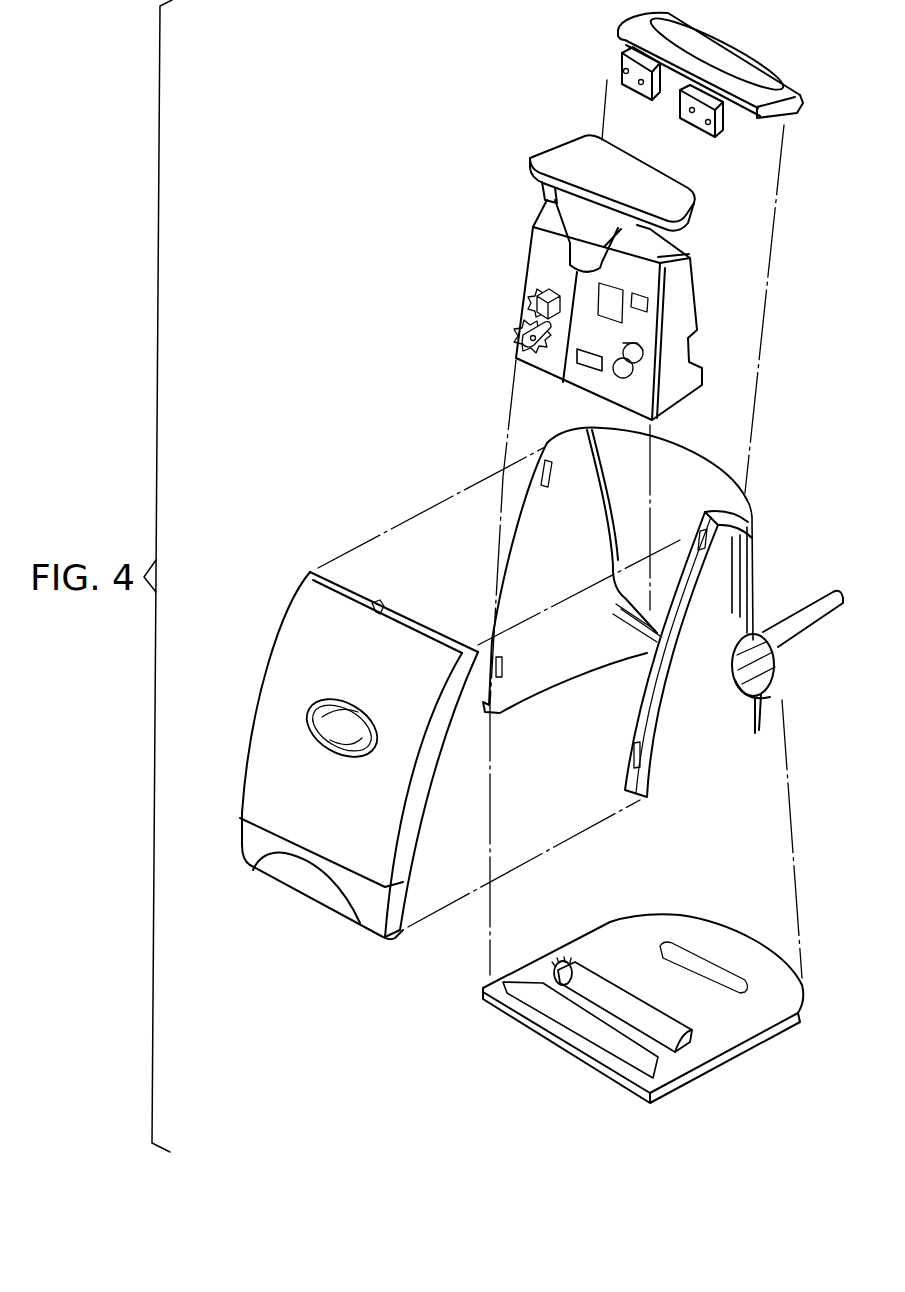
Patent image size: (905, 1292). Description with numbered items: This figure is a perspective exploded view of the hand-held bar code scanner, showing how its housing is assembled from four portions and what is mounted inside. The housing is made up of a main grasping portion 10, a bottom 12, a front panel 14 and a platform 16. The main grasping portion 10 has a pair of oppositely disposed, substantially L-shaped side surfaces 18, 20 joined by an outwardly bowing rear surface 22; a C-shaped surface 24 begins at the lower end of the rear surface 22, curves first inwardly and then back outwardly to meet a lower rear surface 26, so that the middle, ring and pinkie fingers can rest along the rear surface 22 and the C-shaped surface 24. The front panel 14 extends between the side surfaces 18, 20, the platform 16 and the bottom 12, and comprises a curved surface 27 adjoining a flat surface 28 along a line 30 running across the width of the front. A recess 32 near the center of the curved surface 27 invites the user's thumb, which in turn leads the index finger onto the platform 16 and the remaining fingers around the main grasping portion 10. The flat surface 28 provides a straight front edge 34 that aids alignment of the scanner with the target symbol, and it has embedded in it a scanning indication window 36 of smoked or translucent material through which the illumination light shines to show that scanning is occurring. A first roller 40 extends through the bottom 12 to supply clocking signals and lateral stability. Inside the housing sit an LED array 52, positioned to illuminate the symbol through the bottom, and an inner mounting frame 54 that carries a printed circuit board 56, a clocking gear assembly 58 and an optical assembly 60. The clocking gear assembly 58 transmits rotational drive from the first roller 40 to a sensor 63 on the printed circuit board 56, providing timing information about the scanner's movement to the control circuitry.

The main grasping portion 10 is at (680, 465).
The bottom 12 is at (745, 1050).
The front panel 14 is at (305, 610).
The platform 16 is at (730, 65).
The side surface 18 is at (680, 705).
The side surface 20 is at (520, 560).
The rear surface 22 is at (755, 546).
The C-shaped surface 24 is at (775, 690).
The lower rear surface 26 is at (772, 668).
The curved surface 27 is at (270, 773).
The flat surface 28 is at (368, 920).
The line 30 is at (255, 826).
The recess 32 is at (310, 710).
The straight front edge 34 is at (638, 1078).
The scanning indication window 36 is at (288, 873).
The first roller 40 is at (668, 1030).
The LED array 52 is at (568, 1013).
The inner mounting frame 54 is at (672, 312).
The printed circuit board 56 is at (632, 250).
The clocking gear assembly 58 is at (510, 335).
The optical assembly 60 is at (570, 212).
The sensor 63 is at (590, 366).